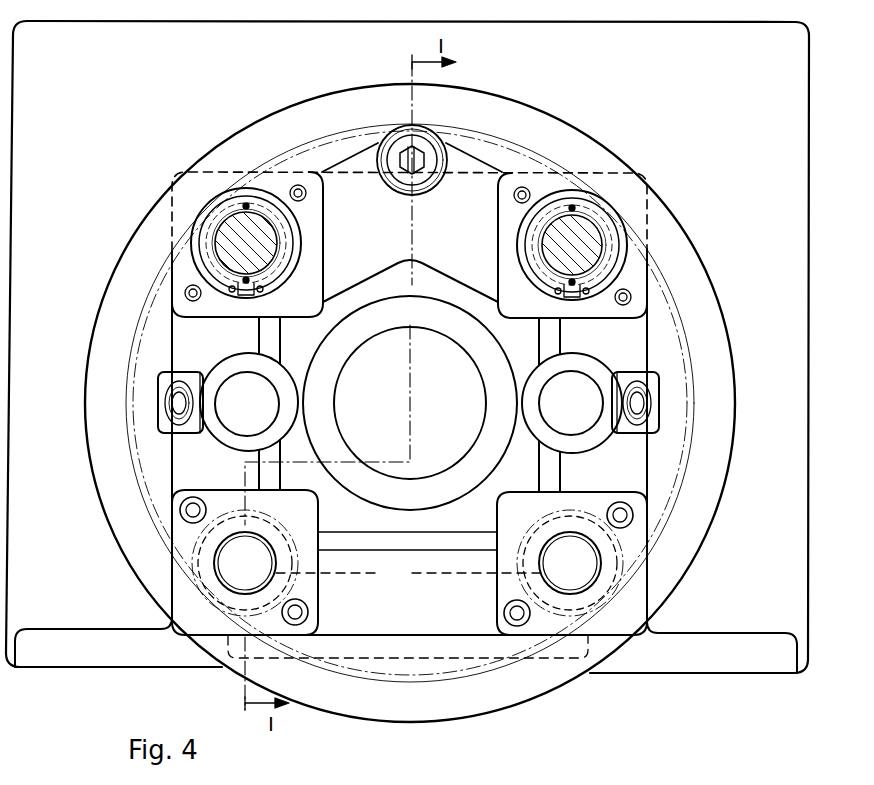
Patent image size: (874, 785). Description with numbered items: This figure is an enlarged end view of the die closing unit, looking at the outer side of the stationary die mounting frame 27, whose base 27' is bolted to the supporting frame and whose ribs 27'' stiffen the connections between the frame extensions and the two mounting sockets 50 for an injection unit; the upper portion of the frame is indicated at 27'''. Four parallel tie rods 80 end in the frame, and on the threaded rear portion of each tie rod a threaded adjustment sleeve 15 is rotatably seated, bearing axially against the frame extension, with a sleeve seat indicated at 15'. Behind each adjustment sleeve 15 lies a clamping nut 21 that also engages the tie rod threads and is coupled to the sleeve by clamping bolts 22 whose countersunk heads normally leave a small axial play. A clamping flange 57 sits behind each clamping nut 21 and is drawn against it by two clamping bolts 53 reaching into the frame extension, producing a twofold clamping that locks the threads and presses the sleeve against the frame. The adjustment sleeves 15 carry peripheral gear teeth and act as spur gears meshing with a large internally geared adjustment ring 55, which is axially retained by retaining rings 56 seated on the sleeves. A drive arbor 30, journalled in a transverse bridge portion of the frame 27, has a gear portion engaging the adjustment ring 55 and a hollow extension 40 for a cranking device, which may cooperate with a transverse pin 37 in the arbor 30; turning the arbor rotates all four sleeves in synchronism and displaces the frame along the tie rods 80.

The threaded adjustment sleeve 15 is at (450, 393).
The shaft bearing seat 15' is at (409, 244).
The clamping nut 21 is at (408, 573).
The clamping bolt 22 is at (524, 229).
The stationary die mounting frame 27 is at (436, 347).
The base of the die mounting frame 27' is at (406, 620).
The rib 27'' is at (397, 537).
The upper portion of housing plate 27''' is at (476, 268).
The drive arbor 30 is at (415, 158).
The transverse pin 37 is at (433, 134).
The hollow extension 40 is at (448, 162).
The mounting socket 50 is at (598, 436).
The clamping bolt 53 is at (630, 513).
The adjustment ring 55 is at (690, 290).
The retaining ring 56 is at (630, 262).
The clamping flange 57 is at (625, 610).
The tie rod 80 is at (218, 220).